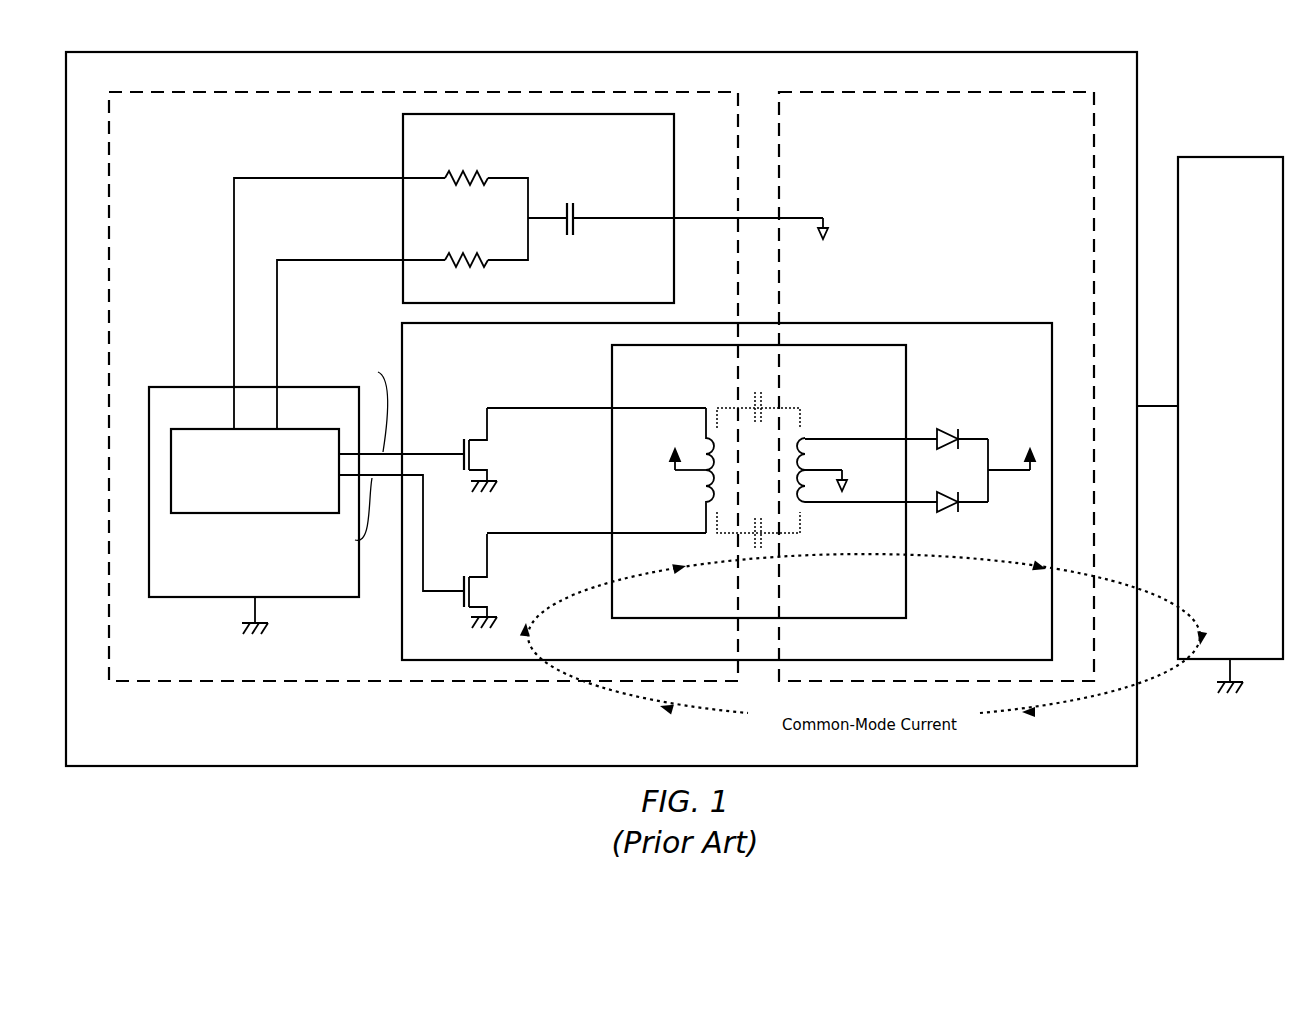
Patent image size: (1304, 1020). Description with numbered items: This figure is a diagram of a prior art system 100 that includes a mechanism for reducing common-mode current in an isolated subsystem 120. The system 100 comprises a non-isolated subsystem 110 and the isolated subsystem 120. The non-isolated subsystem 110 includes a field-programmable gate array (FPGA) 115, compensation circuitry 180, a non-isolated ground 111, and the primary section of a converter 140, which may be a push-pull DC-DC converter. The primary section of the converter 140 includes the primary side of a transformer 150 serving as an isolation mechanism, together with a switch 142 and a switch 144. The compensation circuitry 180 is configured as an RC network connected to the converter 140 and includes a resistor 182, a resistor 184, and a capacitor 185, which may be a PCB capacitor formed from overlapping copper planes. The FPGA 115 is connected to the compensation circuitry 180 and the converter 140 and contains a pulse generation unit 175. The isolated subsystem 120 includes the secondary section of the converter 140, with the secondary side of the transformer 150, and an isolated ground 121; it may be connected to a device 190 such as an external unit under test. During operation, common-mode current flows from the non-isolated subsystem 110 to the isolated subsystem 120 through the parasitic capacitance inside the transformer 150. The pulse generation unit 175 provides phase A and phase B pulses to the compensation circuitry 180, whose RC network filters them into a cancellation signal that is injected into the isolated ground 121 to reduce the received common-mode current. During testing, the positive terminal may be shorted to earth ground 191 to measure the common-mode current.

The system 100 is at (601, 409).
The non-isolated subsystem 110 is at (423, 386).
The isolated subsystem 120 is at (936, 386).
The compensation circuitry 180 is at (528, 271).
The resistor 182 is at (459, 186).
The resistor 184 is at (459, 268).
The capacitor 185 is at (566, 205).
The isolated ground 121 is at (824, 228).
The field-programmable gate array (FPGA) 115 is at (306, 479).
The pulse generation unit 175 is at (255, 471).
The non-isolated ground 111 is at (268, 624).
The converter 140 is at (727, 491).
The switch 142 is at (482, 437).
The switch 144 is at (482, 572).
The transformer 150 is at (774, 481).
The device 190 is at (1210, 408).
The earth ground 191 is at (1243, 683).